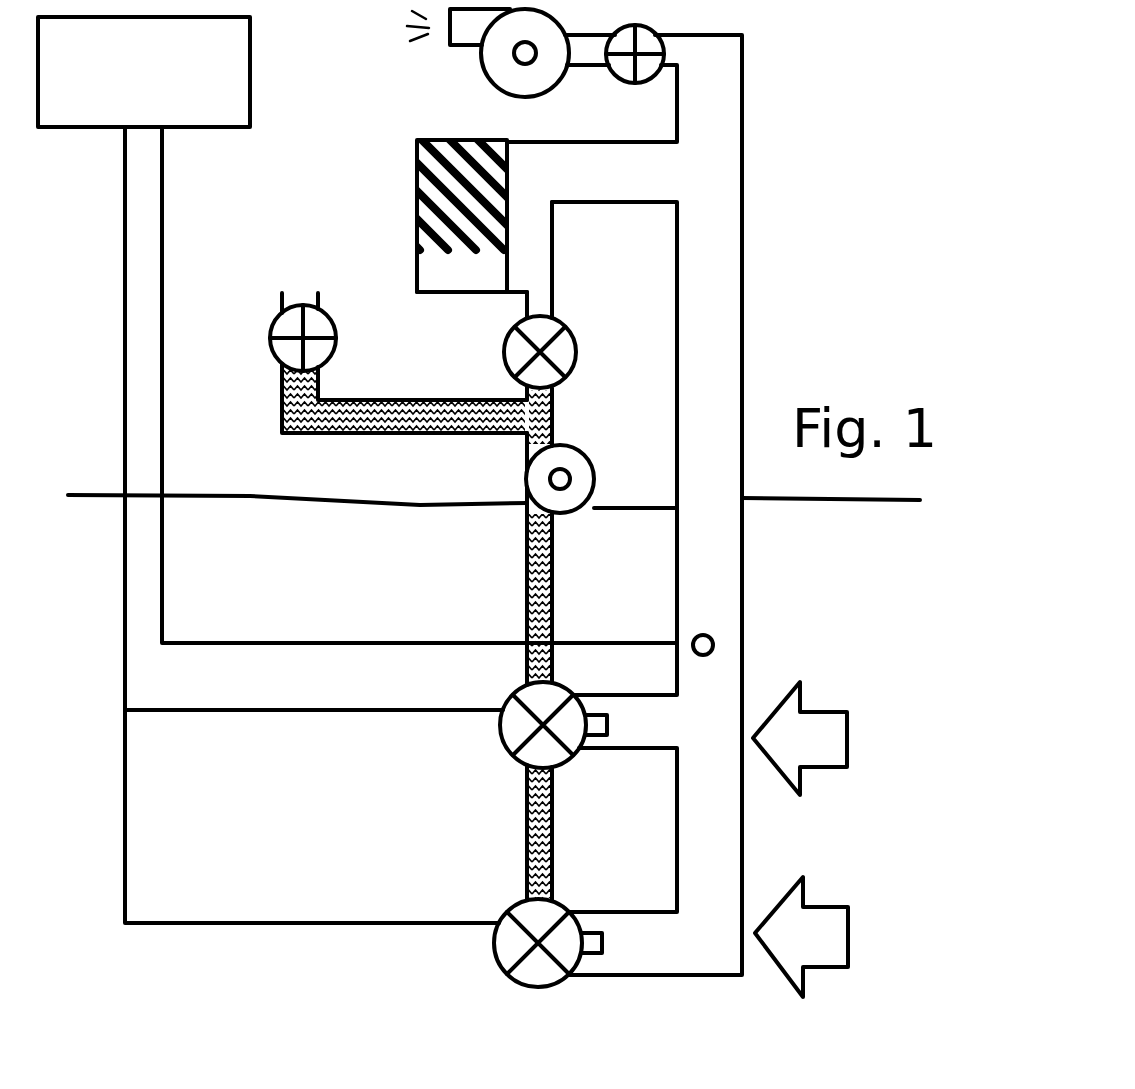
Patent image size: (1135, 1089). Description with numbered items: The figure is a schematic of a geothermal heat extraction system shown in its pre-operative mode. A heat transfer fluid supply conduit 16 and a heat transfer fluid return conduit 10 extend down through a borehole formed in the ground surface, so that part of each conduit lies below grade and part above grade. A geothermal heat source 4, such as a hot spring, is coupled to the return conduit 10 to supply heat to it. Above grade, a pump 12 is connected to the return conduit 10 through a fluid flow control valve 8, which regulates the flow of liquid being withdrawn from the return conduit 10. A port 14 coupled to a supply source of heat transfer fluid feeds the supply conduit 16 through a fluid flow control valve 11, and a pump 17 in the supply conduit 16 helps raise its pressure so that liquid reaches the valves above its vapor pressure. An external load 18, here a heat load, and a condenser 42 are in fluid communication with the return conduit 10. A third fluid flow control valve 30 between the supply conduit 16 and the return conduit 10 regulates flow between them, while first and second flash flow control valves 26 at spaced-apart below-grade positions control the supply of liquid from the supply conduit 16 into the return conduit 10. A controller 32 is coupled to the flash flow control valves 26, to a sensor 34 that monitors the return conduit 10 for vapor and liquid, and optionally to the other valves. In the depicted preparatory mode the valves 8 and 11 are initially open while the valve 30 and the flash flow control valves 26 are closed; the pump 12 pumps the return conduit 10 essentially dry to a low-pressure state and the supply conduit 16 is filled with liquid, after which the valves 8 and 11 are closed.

The heat source 4 is at (817, 903).
The fluid flow control valve 8 is at (665, 48).
The heat transfer fluid return conduit 10 is at (742, 343).
The fluid flow control valve 11 is at (273, 330).
The pump 12 is at (478, 78).
The port 14 is at (318, 297).
The heat transfer fluid supply conduit 16 is at (552, 437).
The pump 17 is at (526, 487).
The external load 18 is at (417, 165).
The flash flow control valve 26 is at (500, 722).
The third fluid flow control valve 30 is at (504, 343).
The controller 32 is at (98, 128).
The sensor 34 is at (703, 655).
The condenser 42 is at (507, 217).